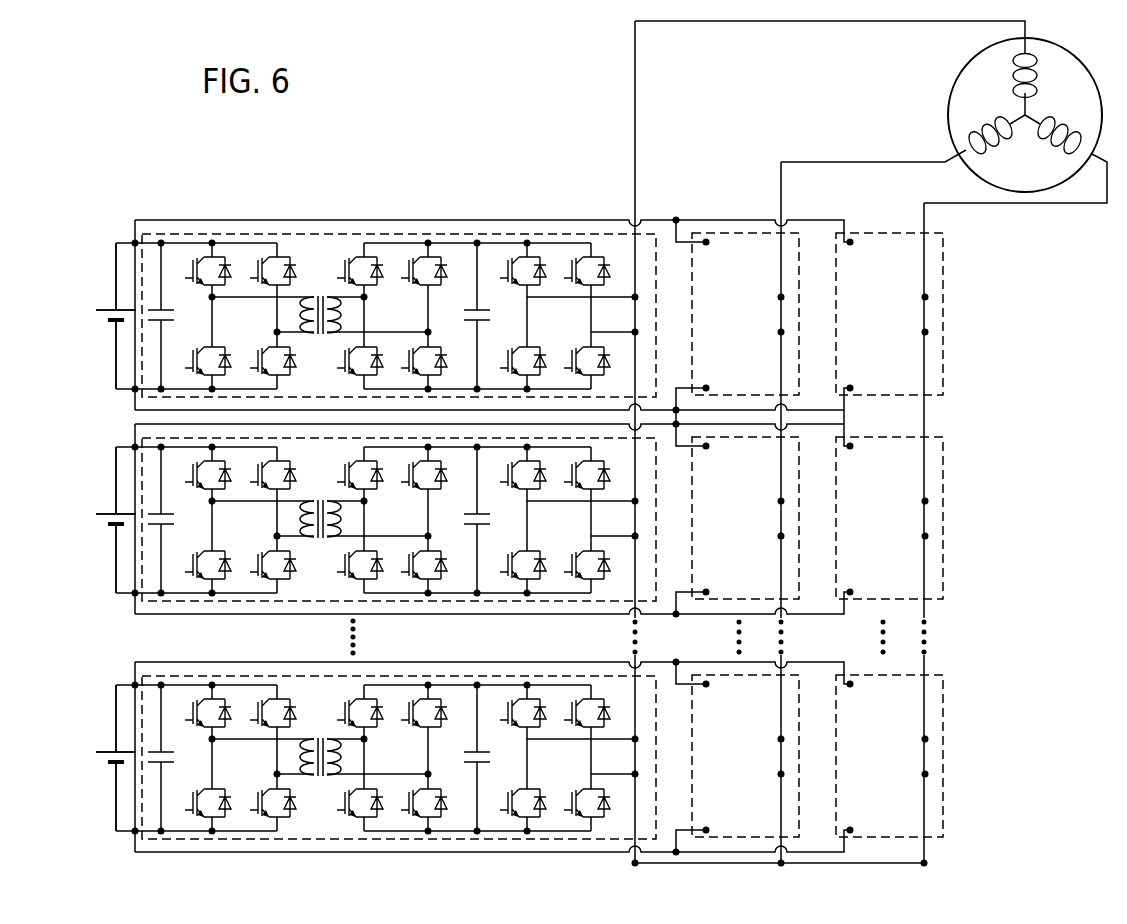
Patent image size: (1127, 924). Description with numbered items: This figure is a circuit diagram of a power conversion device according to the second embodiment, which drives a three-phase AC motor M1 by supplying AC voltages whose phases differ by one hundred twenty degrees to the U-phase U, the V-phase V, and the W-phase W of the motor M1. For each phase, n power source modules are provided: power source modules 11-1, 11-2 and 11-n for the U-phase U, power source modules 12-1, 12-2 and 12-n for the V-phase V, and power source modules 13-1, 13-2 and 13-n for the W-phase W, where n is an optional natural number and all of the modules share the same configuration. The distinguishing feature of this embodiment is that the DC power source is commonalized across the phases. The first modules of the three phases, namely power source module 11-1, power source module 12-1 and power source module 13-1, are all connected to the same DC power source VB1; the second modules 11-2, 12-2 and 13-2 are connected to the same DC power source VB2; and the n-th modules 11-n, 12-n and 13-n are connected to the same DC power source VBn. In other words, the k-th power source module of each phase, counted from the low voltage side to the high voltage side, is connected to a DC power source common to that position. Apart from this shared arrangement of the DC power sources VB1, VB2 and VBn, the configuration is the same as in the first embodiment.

The power source module 11-1 is at (140, 262).
The power source module 11-2 is at (140, 466).
The power source module 11-n is at (140, 704).
The DC power source VB1 is at (100, 316).
The DC power source VB2 is at (100, 520).
The DC power source VBn is at (100, 758).
The power source module 12-1 is at (799, 362).
The power source module 12-2 is at (799, 566).
The power source module 12-n is at (799, 804).
The power source module 13-1 is at (944, 362).
The power source module 13-2 is at (944, 566).
The power source module 13-n is at (944, 804).
The motor M1 is at (949, 110).
The U-phase U is at (830, 442).
The V-phase V is at (873, 506).
The W-phase W is at (1015, 508).